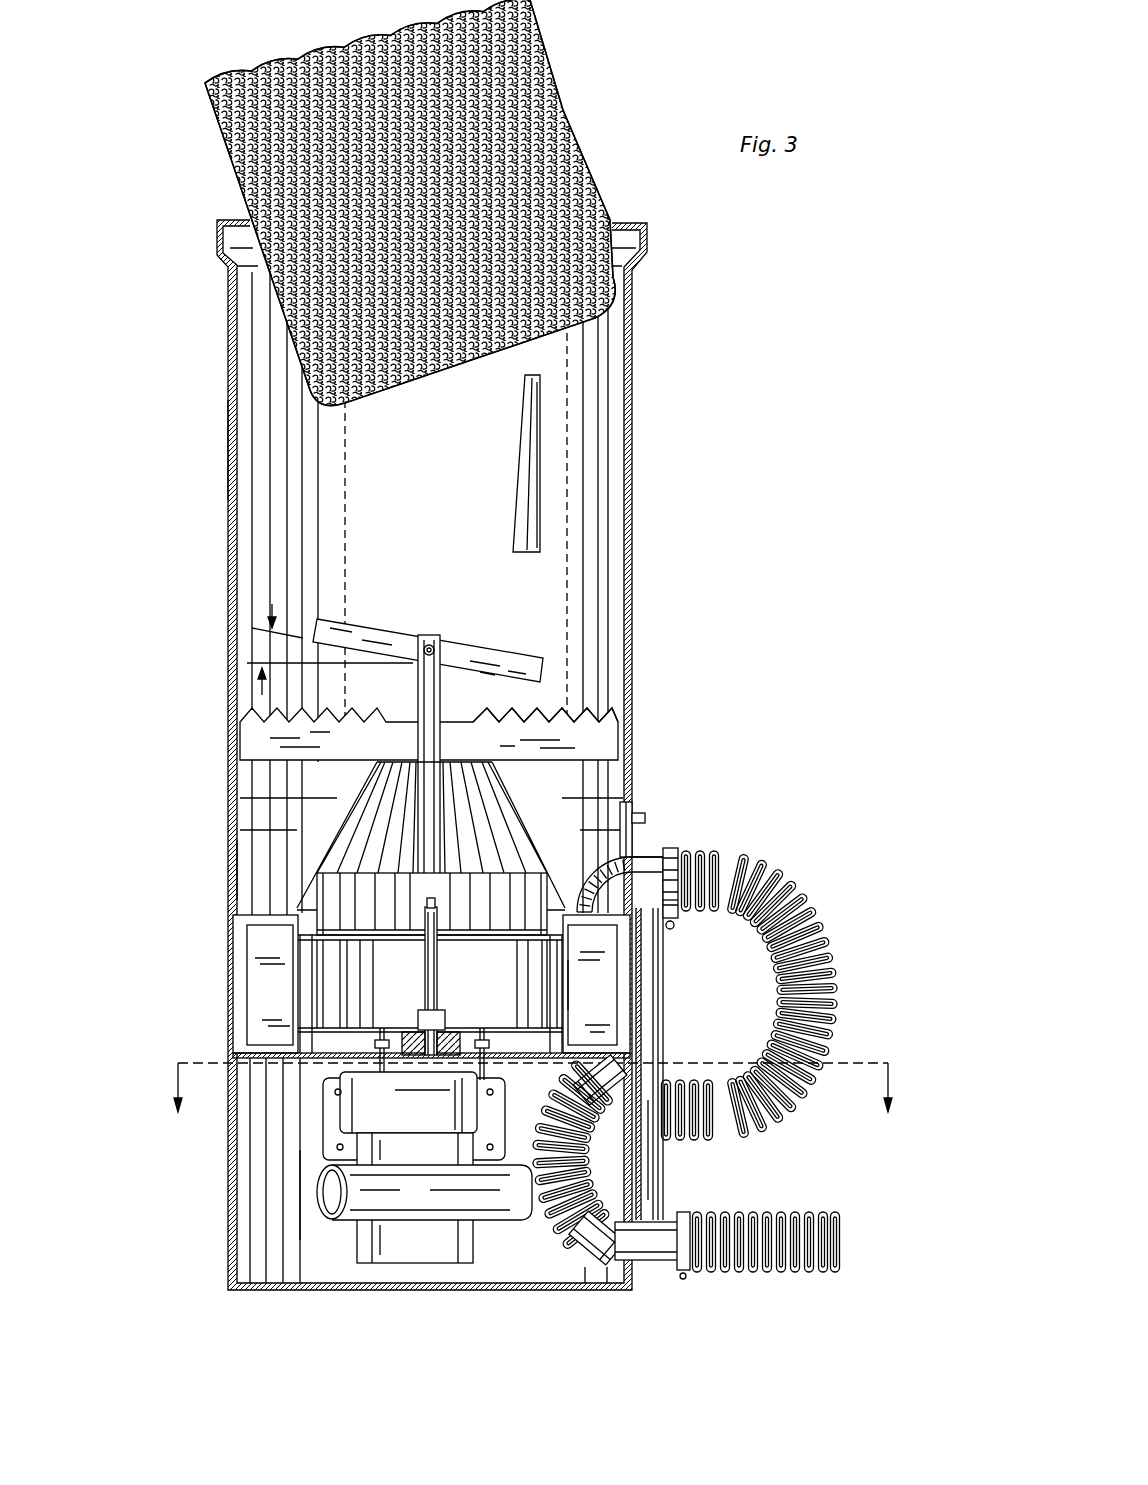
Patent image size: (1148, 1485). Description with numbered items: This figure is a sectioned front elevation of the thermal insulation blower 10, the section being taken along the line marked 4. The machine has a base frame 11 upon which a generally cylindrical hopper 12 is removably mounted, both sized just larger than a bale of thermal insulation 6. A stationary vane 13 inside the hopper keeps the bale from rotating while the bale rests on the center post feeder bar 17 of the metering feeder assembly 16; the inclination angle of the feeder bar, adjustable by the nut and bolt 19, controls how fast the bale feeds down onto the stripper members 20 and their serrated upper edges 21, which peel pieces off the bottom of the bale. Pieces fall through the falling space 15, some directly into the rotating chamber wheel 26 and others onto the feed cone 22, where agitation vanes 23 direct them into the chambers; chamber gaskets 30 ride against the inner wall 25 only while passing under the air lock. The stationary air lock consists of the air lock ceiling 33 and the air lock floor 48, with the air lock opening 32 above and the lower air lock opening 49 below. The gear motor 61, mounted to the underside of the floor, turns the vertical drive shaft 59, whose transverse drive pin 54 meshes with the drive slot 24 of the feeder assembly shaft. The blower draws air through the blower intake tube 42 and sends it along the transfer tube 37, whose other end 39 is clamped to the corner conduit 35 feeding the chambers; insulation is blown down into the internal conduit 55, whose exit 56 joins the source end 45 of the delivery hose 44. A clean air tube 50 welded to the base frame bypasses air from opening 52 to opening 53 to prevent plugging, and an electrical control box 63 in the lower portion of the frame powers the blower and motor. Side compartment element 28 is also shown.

The section line 4- 4 is at (537, 1091).
The bale of thermal insulation 6 is at (600, 113).
The thermal insulation blower 10 is at (712, 420).
The base frame 11 is at (228, 835).
The hopper 12 is at (228, 455).
The stationary vane 13 is at (513, 515).
The falling space 15 is at (240, 878).
The metering feeder assembly 16 is at (236, 708).
The center post feeder bar 17 is at (528, 650).
The nut and bolt 19 is at (430, 640).
The stripper members 20 is at (471, 668).
The serrated upper edges 21 is at (560, 710).
The feed cone 22 is at (322, 868).
The agitation vanes 23 is at (566, 907).
The drive slot 24 is at (427, 908).
The inner wall 25 is at (243, 1017).
The rotating chamber wheel 26 is at (567, 1020).
The left compartment 28 is at (327, 940).
The chamber gaskets 30 is at (247, 915).
The air lock opening 32 is at (612, 908).
The air lock ceiling 33 is at (573, 907).
The corner conduit 35 is at (590, 906).
The transfer tube 37 is at (820, 940).
The other end of transfer tube 39 is at (665, 868).
The blower intake tube 42 is at (500, 1223).
The delivery hose 44 is at (770, 1275).
The source end of delivery hose 45 is at (687, 1272).
The air lock floor 48 is at (308, 1062).
The lower air lock opening 49 is at (618, 1073).
The clean air tube 50 is at (660, 977).
The opening 52 is at (650, 904).
The opening 53 is at (645, 1203).
The transverse drive pin 54 is at (433, 903).
The internal conduit 55 is at (553, 1227).
The exit of internal conduit 56 is at (652, 1270).
The vertical drive shaft 59 is at (438, 1000).
The gear motor 61 is at (337, 1107).
The electrical control box 63 is at (320, 1138).